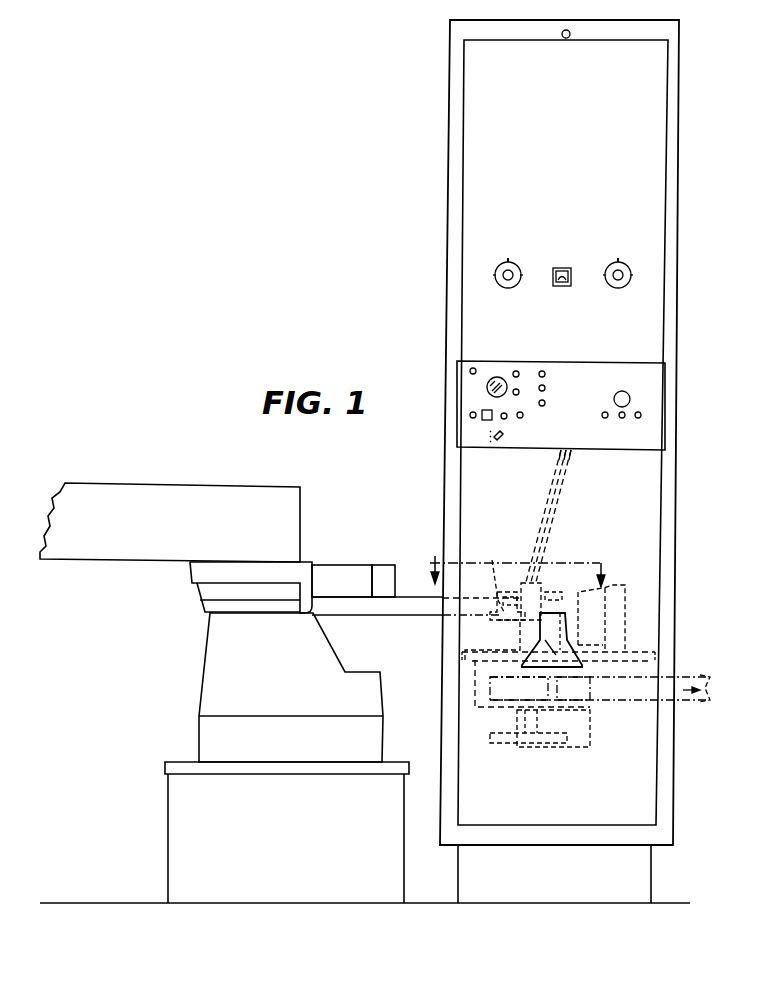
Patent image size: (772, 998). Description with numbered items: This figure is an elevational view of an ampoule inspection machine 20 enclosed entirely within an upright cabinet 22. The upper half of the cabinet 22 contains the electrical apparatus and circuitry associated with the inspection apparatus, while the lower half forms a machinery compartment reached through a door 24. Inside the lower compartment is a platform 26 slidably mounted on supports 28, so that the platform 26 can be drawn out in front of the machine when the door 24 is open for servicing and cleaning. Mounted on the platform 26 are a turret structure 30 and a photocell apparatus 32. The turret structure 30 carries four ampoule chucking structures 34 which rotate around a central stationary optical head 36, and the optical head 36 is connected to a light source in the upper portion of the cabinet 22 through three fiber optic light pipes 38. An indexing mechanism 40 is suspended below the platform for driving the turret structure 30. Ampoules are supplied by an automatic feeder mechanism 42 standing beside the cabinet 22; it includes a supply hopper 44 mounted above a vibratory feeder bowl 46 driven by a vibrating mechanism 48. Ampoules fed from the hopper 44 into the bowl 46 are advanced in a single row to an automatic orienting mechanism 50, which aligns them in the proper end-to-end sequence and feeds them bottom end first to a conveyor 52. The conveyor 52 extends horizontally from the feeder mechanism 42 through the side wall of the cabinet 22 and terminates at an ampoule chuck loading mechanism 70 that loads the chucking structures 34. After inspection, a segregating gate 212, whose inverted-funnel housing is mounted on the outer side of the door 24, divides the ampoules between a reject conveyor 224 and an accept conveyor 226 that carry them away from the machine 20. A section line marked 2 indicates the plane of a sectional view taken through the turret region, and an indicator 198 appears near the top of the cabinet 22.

The ampoule inspection machine 20 is at (432, 246).
The upright cabinet 22 is at (450, 297).
The door 24 is at (470, 475).
The indicator lamp 198 is at (566, 40).
The fiber optic light pipe 38 is at (565, 497).
The section line 2- 2 is at (510, 561).
The supply hopper 44 is at (306, 494).
The vibratory feeder bowl 46 is at (197, 598).
The automatic orienting mechanism 50 is at (357, 578).
The conveyor 52 is at (403, 605).
The vibrating mechanism 48 is at (218, 688).
The automatic feeder mechanism 42 is at (142, 718).
The ampoule chuck loading mechanism 70 is at (487, 576).
The ampoule chucking structure 34 is at (510, 596).
The central stationary optical head 36 is at (545, 592).
The photocell apparatus 32 is at (612, 592).
The turret structure 30 is at (510, 638).
The segregating gate 212 is at (568, 657).
The platform 26 is at (628, 660).
The supports 28 is at (660, 662).
The reject conveyor 224 is at (500, 694).
The indexing mechanism 40 is at (474, 708).
The accept conveyor 226 is at (611, 700).